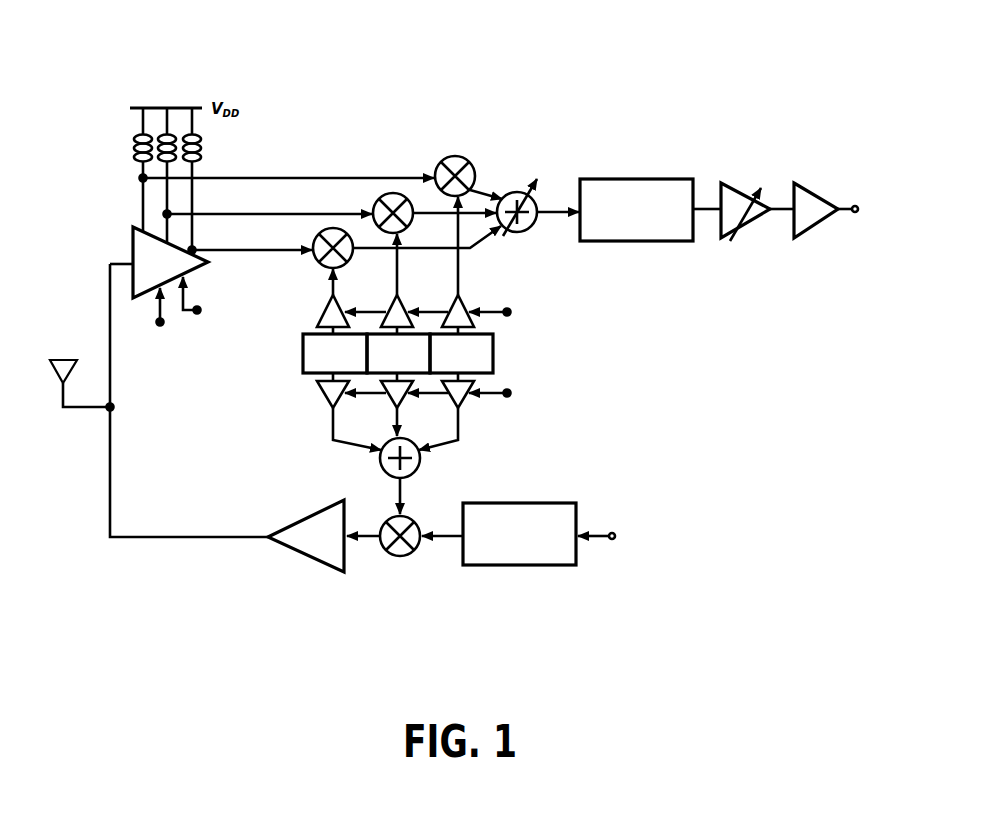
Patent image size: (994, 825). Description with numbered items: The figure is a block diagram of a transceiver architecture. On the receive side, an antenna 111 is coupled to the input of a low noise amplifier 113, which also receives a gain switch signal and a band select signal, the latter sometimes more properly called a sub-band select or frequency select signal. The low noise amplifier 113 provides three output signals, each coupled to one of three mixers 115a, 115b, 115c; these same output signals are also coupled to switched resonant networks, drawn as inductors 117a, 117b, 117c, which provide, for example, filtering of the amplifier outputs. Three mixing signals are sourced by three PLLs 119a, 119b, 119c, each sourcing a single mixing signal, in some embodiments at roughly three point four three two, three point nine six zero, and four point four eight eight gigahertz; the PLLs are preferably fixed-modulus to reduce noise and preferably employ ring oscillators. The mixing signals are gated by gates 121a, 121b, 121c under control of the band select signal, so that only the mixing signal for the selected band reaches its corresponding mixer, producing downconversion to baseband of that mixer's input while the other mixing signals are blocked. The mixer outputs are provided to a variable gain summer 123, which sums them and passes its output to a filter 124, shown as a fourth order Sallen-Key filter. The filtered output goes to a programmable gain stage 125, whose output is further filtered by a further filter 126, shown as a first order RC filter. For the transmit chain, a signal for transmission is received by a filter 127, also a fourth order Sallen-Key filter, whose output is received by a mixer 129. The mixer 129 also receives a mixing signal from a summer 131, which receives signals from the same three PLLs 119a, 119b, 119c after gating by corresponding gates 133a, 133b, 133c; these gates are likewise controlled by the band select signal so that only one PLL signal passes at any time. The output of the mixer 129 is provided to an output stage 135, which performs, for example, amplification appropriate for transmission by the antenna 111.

The antenna 111 is at (61, 366).
The low noise amplifier 113 is at (132, 243).
The mixer 115a is at (315, 237).
The mixer 115b is at (375, 206).
The mixer 115c is at (445, 161).
The inductor 117a is at (135, 140).
The inductor 117b is at (163, 132).
The inductor 117c is at (204, 143).
The PLL 119a is at (305, 375).
The PLL 119b is at (376, 376).
The PLL 119c is at (493, 355).
The gate 121a is at (326, 312).
The gate 121b is at (391, 308).
The gate 121c is at (452, 306).
The variable gain summer 123 is at (540, 197).
The filter 124 is at (622, 179).
The programmable gain stage 125 is at (747, 219).
The further filter 126 is at (815, 187).
The filter 127 is at (530, 503).
The mixer 129 is at (410, 518).
The summer 131 is at (420, 467).
The gate 133a is at (327, 411).
The gate 133b is at (404, 404).
The gate 133c is at (466, 410).
The output stage 135 is at (285, 525).